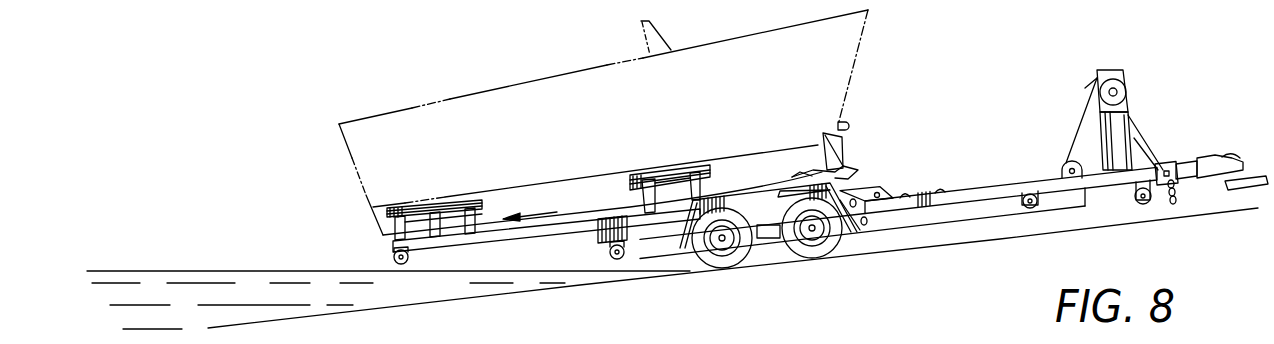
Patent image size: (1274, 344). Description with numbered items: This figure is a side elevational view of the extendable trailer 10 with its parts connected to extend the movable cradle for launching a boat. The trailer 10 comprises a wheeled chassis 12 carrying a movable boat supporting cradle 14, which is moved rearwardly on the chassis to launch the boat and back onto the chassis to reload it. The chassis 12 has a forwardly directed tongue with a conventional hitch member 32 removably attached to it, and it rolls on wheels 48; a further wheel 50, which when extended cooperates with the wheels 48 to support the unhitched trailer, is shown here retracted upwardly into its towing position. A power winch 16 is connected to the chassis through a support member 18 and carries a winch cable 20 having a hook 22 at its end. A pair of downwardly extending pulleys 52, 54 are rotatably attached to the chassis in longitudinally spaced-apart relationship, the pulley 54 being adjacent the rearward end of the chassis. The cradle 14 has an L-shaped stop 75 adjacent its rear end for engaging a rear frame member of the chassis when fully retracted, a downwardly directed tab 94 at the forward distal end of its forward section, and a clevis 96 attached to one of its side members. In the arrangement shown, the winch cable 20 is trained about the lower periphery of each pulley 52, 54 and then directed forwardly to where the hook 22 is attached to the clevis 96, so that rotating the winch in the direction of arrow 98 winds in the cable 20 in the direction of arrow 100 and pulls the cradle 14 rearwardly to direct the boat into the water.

The extendable trailer 10 is at (969, 122).
The wheeled chassis 12 is at (981, 182).
The movable boat supporting cradle 14 is at (539, 250).
The power winch 16 is at (1118, 90).
The support member 18 is at (1125, 125).
The winch cable 20 is at (935, 226).
The hook 22 is at (798, 175).
The hitch member 32 is at (1211, 150).
The wheels 48 is at (738, 260).
The wheel 50 is at (1141, 205).
The pulley 52 is at (1025, 209).
The pulley 54 is at (618, 259).
The L-shaped stop 75 is at (417, 253).
The downwardly directed tab 94 is at (847, 177).
The clevis 96 is at (822, 135).
The arrow 98 is at (1084, 88).
The arrow 100 is at (1067, 133).